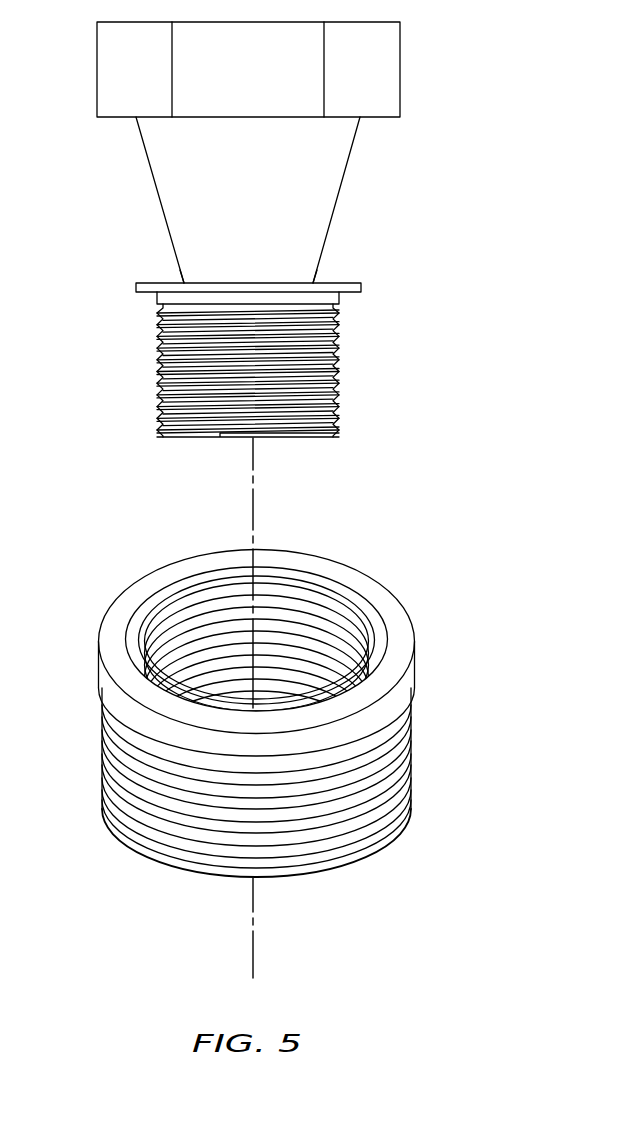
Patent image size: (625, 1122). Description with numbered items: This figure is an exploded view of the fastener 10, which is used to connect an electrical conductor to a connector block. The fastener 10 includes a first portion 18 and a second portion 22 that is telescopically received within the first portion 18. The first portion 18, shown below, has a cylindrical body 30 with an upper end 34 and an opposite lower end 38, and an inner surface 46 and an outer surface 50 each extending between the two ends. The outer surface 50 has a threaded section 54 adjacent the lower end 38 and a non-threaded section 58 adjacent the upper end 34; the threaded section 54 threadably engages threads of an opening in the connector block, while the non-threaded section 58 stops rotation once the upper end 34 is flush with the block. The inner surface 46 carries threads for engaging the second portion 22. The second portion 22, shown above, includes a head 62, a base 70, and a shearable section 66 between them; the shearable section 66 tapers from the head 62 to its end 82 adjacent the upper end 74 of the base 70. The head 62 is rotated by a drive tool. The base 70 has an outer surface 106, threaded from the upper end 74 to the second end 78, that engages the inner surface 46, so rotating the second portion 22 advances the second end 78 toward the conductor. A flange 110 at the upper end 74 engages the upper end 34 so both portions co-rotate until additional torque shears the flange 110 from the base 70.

The fastener 10 is at (293, 393).
The first portion 18 is at (288, 733).
The second portion 22 is at (269, 164).
The cylindrical body 30 is at (393, 780).
The upper end 34 is at (128, 602).
The lower end 38 is at (303, 878).
The inner surface 46 is at (330, 606).
The outer surface 50 is at (345, 825).
The threaded section 54 is at (122, 781).
The non-threaded section 58 is at (123, 698).
The head 62 is at (118, 73).
The shearable section 66 is at (177, 200).
The base 70 is at (178, 352).
The upper end 74 is at (325, 282).
The second end 78 is at (283, 439).
The end 82 is at (185, 282).
The outer surface 106 is at (178, 395).
The flange 110 is at (361, 288).